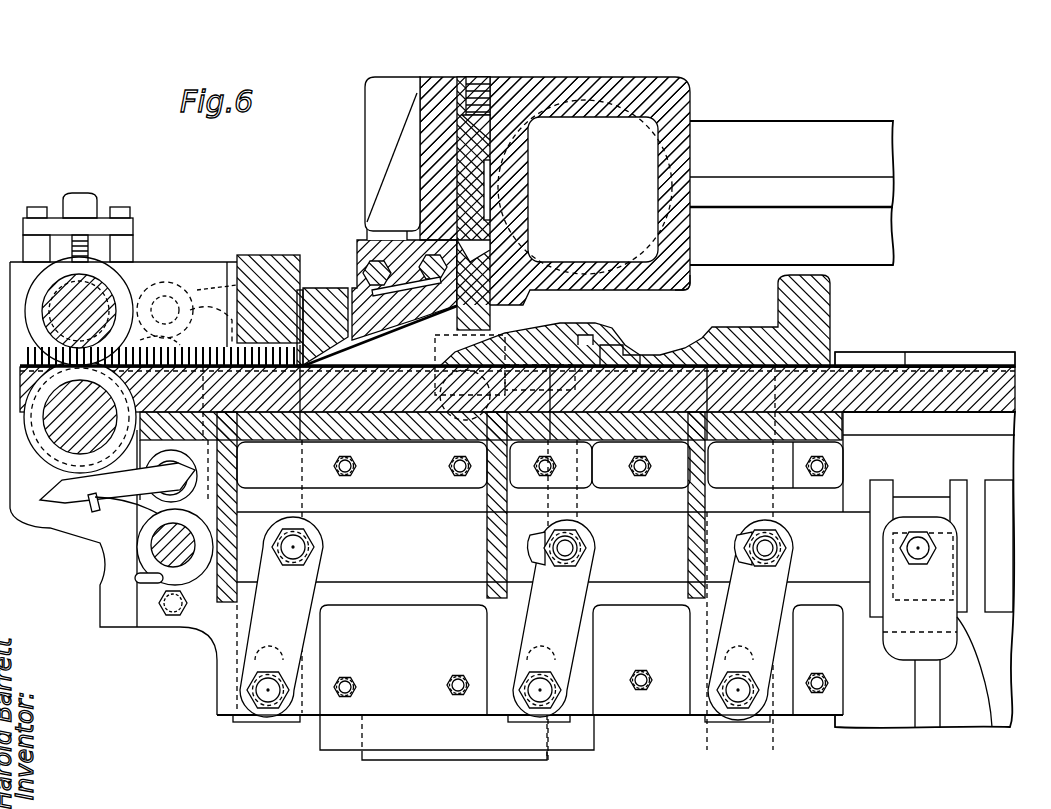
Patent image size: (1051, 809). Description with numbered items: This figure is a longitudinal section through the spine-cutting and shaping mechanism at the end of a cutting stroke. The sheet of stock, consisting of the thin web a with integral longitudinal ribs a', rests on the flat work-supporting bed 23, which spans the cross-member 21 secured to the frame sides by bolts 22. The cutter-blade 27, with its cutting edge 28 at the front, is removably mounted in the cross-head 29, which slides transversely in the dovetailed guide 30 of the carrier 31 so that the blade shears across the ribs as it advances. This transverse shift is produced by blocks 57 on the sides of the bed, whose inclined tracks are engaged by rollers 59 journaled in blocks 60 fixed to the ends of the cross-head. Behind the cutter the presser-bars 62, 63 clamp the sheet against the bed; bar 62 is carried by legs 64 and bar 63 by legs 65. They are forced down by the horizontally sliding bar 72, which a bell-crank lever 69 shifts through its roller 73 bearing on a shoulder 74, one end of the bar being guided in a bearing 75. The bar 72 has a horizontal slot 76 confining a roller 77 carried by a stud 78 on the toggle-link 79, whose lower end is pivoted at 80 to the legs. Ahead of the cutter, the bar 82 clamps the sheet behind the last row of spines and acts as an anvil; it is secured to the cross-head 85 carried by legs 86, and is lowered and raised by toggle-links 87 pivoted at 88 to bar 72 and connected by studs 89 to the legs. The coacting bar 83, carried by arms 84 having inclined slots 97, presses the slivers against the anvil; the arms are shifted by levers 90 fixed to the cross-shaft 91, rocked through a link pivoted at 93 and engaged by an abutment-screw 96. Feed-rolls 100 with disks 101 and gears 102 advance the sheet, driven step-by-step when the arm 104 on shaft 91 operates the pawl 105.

The cross-member 21 is at (785, 417).
The bolts 22 is at (448, 468).
The work-supporting bed 23 is at (940, 382).
The cutter-blade 27 is at (355, 298).
The cutting edge 28 is at (525, 404).
The cross-head 29 is at (420, 139).
The dovetailed guide 30 is at (477, 262).
The carrier 31 is at (686, 283).
The blocks 57 is at (428, 386).
The rollers 59 is at (436, 346).
The blocks 60 is at (580, 315).
The presser-bar 62 is at (830, 296).
The presser-bar 63 is at (620, 338).
The legs 64 is at (768, 723).
The legs 65 is at (570, 722).
The bell-crank lever 69 is at (937, 622).
The bar 72 is at (850, 513).
The roller 73 is at (920, 498).
The shoulder 74 is at (972, 495).
The bearing 75 is at (843, 128).
The horizontal slot 76 is at (538, 565).
The roller 77 is at (586, 556).
The stud 78 is at (578, 552).
The toggle-link 79 is at (583, 635).
The pivot 80 is at (742, 702).
The bar 82 is at (308, 262).
The bar 83 is at (323, 290).
The arms 84 is at (197, 298).
The cross-head 85 is at (285, 260).
The legs 86 is at (247, 722).
The toggle-links 87 is at (278, 578).
The pivot 88 is at (315, 548).
The studs 89 is at (270, 697).
The levers 90 is at (192, 467).
The cross-shaft 91 is at (152, 546).
The pivot 93 is at (210, 306).
The abutment-screw 96 is at (628, 350).
The inclined slot 97 is at (222, 298).
The feed-rolls 100 is at (50, 450).
The disks 101 is at (117, 283).
The gears 102 is at (136, 580).
The arm 104 is at (186, 607).
The pawl 105 is at (55, 502).
The web a is at (577, 348).
The longitudinal ribs a' is at (919, 349).